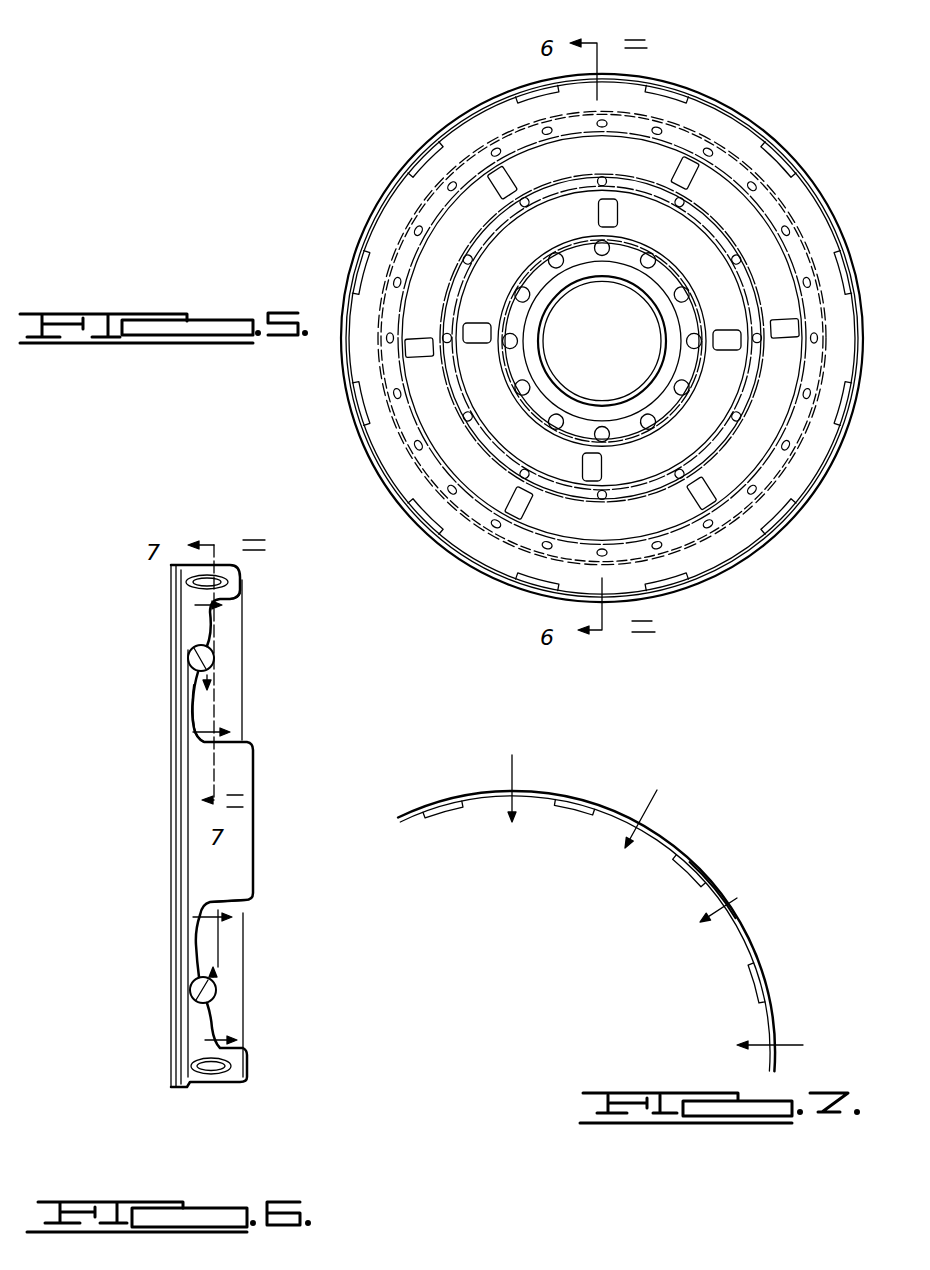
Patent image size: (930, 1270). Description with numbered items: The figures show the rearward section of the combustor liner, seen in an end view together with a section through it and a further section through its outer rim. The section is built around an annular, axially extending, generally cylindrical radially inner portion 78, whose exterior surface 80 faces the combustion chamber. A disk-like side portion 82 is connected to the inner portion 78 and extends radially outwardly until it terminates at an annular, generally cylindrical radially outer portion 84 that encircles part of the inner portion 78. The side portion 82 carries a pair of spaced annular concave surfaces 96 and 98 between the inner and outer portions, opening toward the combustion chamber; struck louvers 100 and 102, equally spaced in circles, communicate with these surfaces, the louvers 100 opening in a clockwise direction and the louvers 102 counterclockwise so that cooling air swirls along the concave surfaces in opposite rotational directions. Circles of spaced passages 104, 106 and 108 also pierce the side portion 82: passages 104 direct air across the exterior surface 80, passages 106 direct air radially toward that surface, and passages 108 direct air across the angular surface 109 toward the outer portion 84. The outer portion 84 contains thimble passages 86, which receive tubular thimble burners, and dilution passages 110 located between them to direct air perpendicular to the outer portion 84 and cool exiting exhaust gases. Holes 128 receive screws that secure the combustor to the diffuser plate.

In FIG. 6, the radially inner portion 78 is at (255, 768).
In FIG. 6, the exterior surface 80 is at (243, 910).
In FIG. 6, the side portion 82 is at (190, 690).
In FIG. 6, the radially outer portion 84 is at (228, 566).
In FIG. 7, the radially outer portion 84 is at (717, 895).
In FIG. 6, the thimble passages 86 is at (190, 655).
In FIG. 7, the thimble passages 86 is at (435, 808).
In FIG. 6, the annular concave surface 96 is at (198, 722).
In FIG. 6, the annular concave surface 98 is at (212, 657).
In FIG. 5, the louvers 100 is at (597, 213).
In FIG. 5, the louvers 102 is at (492, 196).
In FIG. 5, the passages 104 is at (590, 296).
In FIG. 5, the passages 106 is at (680, 197).
In FIG. 5, the passages 108 is at (547, 140).
In FIG. 6, the angular surface 109 is at (222, 601).
In FIG. 6, the dilution passages 110 is at (220, 1088).
In FIG. 7, the dilution passages 110 is at (513, 793).
In FIG. 5, the holes 128 is at (619, 221).